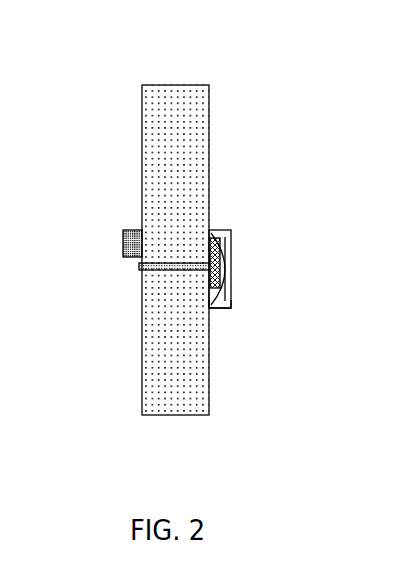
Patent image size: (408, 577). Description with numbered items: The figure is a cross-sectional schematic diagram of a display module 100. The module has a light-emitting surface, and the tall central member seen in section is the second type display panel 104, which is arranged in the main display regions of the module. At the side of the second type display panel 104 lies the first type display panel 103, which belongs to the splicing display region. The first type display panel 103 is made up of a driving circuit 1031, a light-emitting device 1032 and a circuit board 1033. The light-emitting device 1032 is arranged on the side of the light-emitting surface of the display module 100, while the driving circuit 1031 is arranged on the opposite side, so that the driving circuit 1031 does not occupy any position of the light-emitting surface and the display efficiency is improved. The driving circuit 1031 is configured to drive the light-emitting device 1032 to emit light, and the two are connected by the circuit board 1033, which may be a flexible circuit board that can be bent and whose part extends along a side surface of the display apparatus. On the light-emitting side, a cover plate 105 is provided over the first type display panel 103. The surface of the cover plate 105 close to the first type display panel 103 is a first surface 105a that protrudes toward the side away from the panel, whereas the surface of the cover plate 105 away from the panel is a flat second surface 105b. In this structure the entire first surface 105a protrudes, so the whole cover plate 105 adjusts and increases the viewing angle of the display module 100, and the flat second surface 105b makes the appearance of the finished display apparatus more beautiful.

The display module 100 is at (195, 245).
The first type display panel 103 is at (172, 262).
The second type display panel 104 is at (182, 95).
The cover plate 105 is at (230, 285).
The first surface 105a is at (231, 292).
The second surface 105b is at (232, 298).
The driving circuit 1031 is at (133, 230).
The light-emitting device 1032 is at (213, 266).
The circuit board 1033 is at (168, 269).